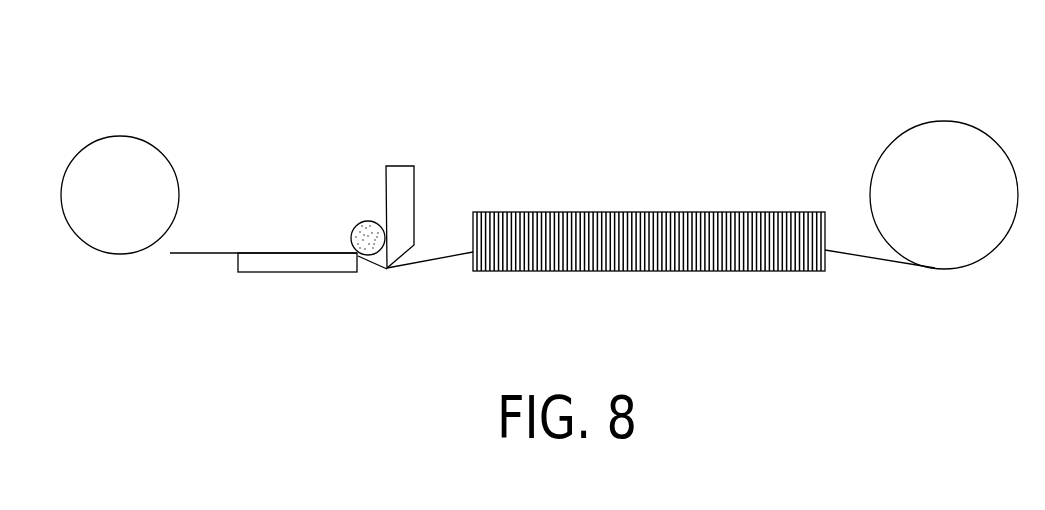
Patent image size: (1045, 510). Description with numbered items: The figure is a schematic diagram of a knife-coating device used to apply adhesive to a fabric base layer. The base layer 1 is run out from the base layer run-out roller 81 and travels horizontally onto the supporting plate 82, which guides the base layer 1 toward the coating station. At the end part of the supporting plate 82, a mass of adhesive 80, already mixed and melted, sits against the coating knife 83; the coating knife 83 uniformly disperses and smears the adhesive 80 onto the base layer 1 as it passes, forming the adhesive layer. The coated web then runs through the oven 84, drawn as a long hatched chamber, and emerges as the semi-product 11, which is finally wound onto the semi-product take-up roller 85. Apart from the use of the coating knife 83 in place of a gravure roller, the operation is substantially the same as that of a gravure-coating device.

The base layer 1 is at (203, 253).
The semi-product 11 is at (868, 260).
The adhesive 80 is at (366, 221).
The base layer run-out roller 81 is at (122, 150).
The supporting plate 82 is at (292, 273).
The coating knife 83 is at (414, 182).
The oven 84 is at (713, 210).
The semi-product take-up roller 85 is at (945, 124).